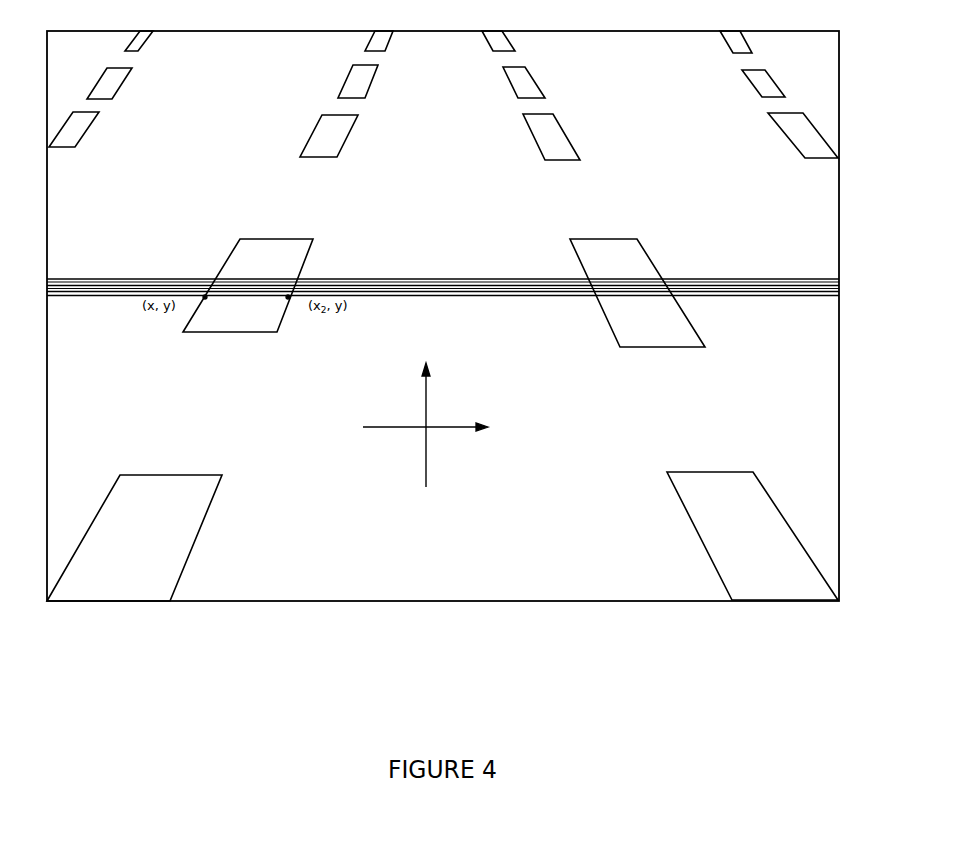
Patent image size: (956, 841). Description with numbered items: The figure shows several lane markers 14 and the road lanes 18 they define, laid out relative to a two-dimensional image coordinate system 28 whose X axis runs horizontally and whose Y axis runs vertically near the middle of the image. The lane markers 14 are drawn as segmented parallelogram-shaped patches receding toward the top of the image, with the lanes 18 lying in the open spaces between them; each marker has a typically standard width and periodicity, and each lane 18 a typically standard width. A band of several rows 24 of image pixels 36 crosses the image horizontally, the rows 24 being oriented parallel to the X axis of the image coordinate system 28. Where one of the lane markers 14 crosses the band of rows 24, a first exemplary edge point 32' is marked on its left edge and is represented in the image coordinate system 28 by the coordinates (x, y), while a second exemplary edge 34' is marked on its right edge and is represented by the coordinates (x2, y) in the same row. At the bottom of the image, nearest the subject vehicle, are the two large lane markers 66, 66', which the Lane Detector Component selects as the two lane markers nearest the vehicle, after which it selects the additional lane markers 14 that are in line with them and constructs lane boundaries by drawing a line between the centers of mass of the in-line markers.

The lane marker 14 is at (73, 125).
The lane 18 is at (188, 82).
The rows of image pixels 24 is at (46, 279).
The image pixel 36 is at (129, 279).
The first exemplary edge point 32' is at (169, 318).
The second exemplary edge 34' is at (317, 319).
The image coordinate system 28 is at (422, 437).
The lane marker nearest to the subject vehicle 66 is at (150, 538).
The lane marker nearest to the subject vehicle 66' is at (739, 536).